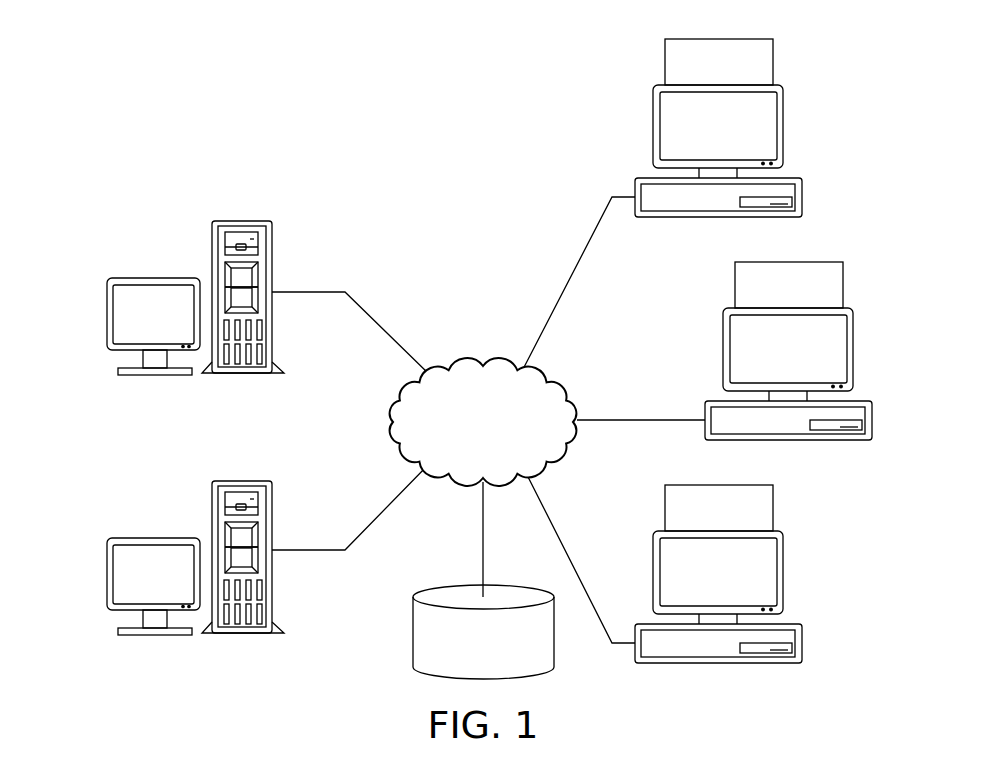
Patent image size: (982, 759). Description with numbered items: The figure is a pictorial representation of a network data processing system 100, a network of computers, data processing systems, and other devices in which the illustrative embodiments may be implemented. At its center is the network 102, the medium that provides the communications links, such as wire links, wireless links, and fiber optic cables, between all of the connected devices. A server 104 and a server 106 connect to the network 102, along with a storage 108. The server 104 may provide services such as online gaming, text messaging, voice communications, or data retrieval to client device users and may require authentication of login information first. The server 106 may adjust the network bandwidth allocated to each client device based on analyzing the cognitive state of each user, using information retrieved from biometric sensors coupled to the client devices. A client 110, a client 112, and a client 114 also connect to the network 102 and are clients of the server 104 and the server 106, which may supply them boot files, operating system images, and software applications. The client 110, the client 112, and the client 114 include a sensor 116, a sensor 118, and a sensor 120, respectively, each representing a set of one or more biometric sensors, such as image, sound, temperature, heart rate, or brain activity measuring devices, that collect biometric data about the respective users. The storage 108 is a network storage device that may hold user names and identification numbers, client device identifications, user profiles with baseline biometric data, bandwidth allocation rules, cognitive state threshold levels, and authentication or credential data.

The network data processing system 100 is at (351, 76).
The network 102 is at (457, 372).
The server 104 is at (107, 574).
The server 106 is at (107, 316).
The storage 108 is at (413, 631).
The client 110 is at (802, 190).
The client 112 is at (872, 431).
The client 114 is at (802, 653).
The sensor 116 is at (773, 63).
The sensor 118 is at (843, 286).
The sensor 120 is at (773, 507).